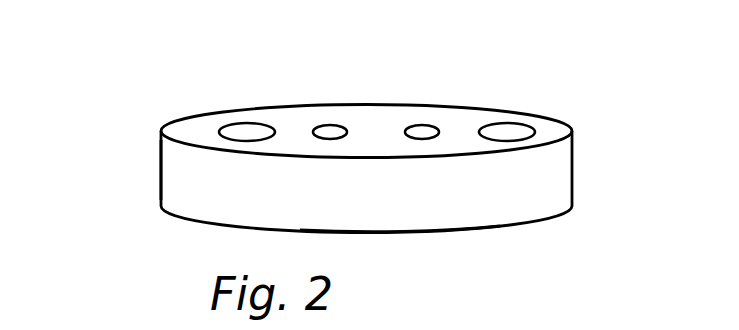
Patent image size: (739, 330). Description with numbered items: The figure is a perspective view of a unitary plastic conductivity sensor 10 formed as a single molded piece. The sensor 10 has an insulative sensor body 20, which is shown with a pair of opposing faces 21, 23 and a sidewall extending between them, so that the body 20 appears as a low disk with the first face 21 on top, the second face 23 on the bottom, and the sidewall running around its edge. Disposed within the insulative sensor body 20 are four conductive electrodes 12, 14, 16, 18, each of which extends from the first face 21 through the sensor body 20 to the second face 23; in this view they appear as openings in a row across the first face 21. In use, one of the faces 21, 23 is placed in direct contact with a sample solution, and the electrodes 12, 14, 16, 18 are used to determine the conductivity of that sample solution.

The plastic conductivity sensor 10 is at (592, 141).
The conductive electrode 12 is at (247, 124).
The conductive electrode 14 is at (330, 125).
The conductive electrode 16 is at (422, 125).
The conductive electrode 18 is at (510, 124).
The insulative sensor body 20 is at (161, 157).
The first face 21 is at (380, 120).
The second face 23 is at (449, 230).